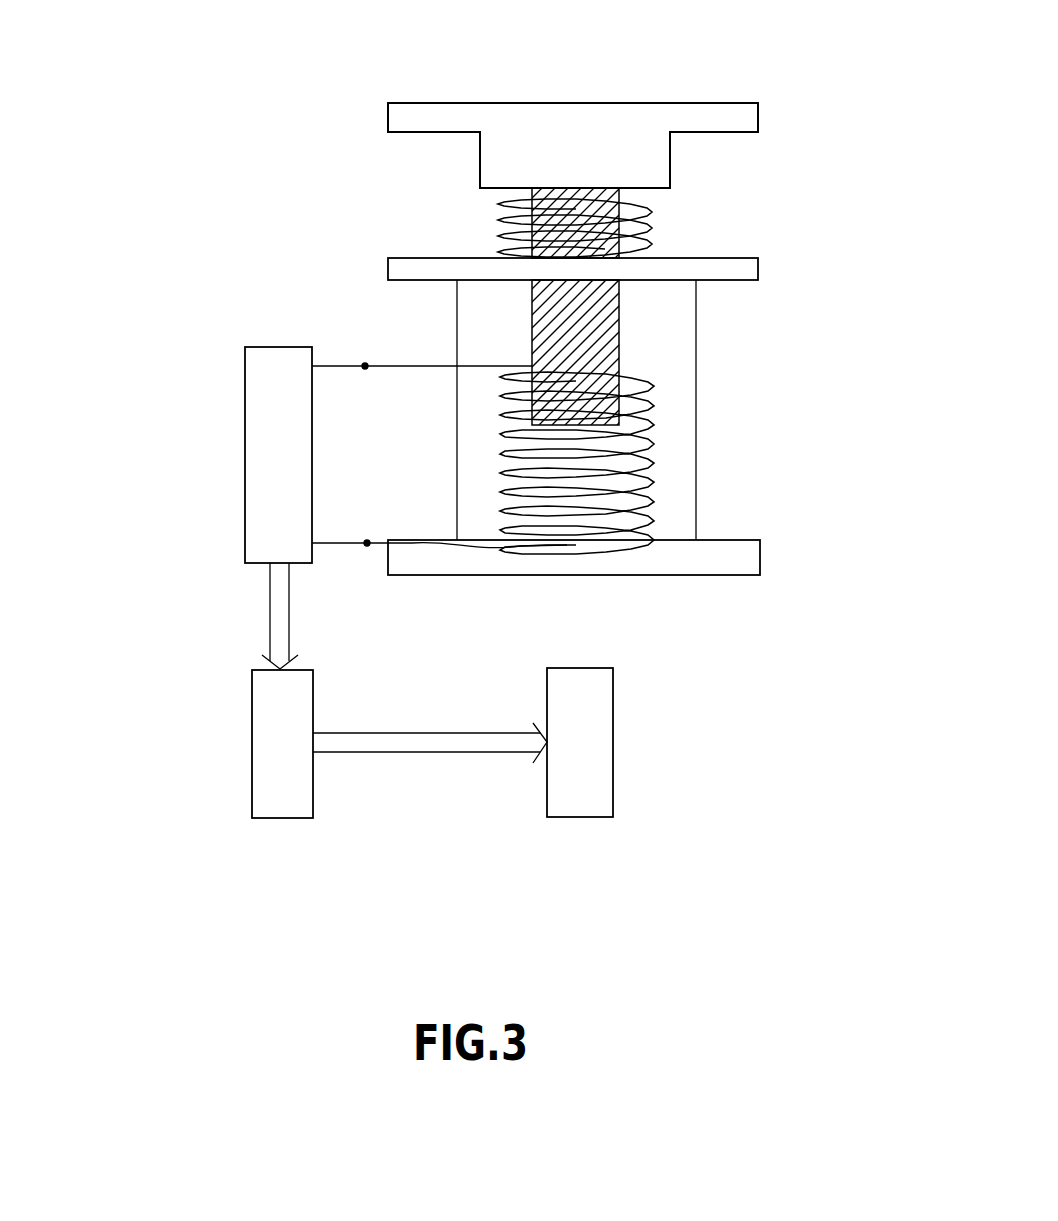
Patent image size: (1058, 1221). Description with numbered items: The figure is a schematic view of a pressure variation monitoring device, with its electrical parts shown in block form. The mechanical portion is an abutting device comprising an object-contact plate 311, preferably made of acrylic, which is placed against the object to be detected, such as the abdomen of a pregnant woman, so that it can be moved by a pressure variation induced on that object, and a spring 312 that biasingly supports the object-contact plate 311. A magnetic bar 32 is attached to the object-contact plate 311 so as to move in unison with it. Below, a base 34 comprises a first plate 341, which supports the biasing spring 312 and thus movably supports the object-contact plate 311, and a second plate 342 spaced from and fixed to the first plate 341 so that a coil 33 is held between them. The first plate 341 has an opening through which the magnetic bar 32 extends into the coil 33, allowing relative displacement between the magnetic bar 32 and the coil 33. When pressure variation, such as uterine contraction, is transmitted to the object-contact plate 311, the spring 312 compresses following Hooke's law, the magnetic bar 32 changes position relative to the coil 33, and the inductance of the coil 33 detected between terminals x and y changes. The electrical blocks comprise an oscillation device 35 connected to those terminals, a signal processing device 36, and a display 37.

The object-contact plate 311 is at (690, 115).
The spring 312 is at (655, 222).
The magnetic bar 32 is at (583, 345).
The coil 33 is at (655, 415).
The base 34 is at (599, 371).
The first plate 341 is at (763, 267).
The second plate 342 is at (762, 556).
The oscillation device 35 is at (253, 455).
The signal processing device 36 is at (260, 708).
The display 37 is at (567, 707).